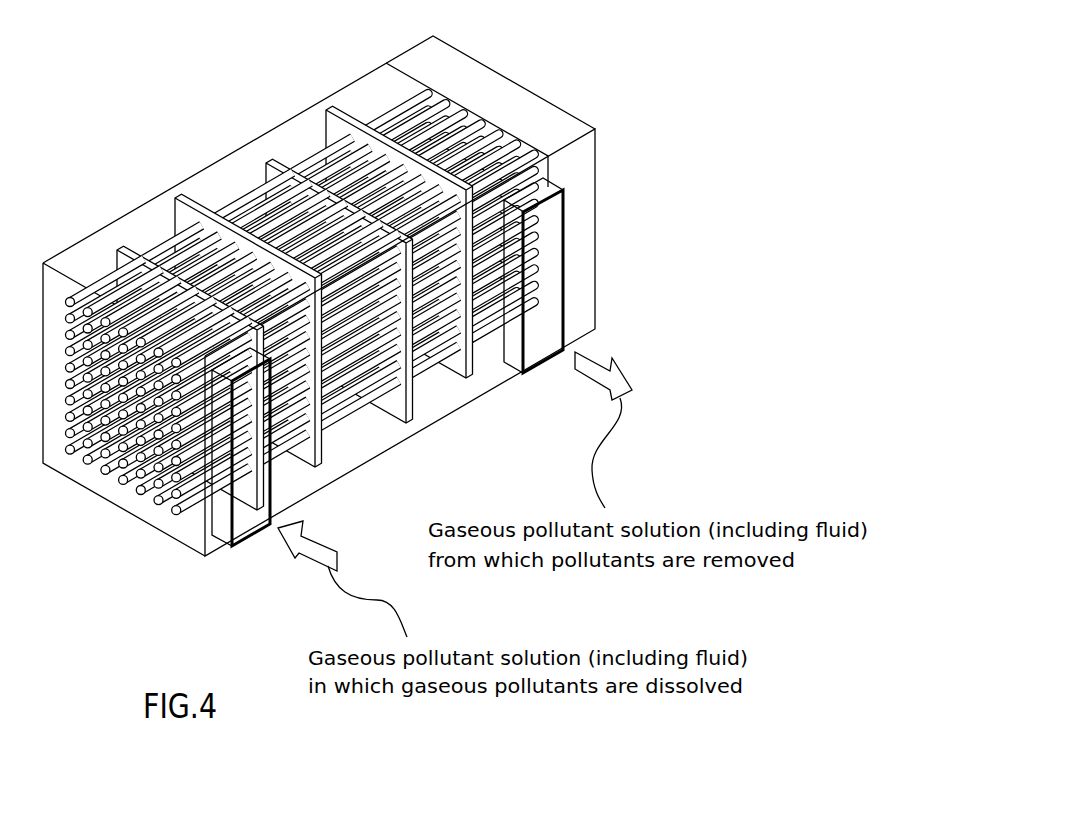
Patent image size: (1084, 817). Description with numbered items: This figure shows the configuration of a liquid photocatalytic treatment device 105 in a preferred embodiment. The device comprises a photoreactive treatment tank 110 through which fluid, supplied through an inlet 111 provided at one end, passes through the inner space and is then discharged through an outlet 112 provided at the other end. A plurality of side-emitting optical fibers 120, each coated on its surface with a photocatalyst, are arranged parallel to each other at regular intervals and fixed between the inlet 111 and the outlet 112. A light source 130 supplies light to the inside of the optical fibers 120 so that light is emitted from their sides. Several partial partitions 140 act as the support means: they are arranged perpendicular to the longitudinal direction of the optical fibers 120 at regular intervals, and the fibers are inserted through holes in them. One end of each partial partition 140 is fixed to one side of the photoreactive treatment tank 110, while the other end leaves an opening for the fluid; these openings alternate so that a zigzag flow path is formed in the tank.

The liquid photocatalytic treatment device 105 is at (401, 328).
The photoreactive treatment tank 110 is at (337, 328).
The inlet 111 is at (240, 538).
The outlet 112 is at (543, 363).
The side-emitting optical fiber 120 is at (300, 279).
The light source 130 is at (522, 102).
The partial partition 140 is at (325, 108).